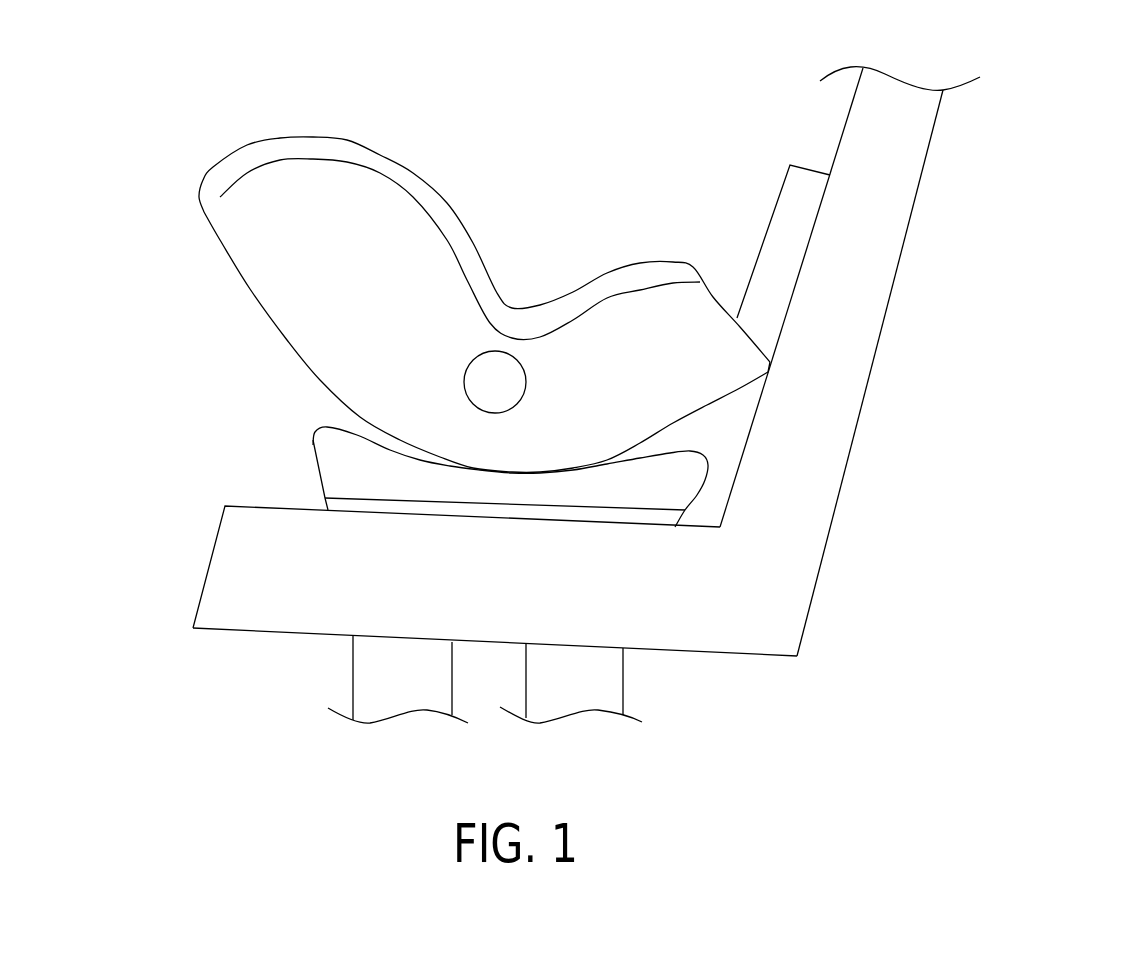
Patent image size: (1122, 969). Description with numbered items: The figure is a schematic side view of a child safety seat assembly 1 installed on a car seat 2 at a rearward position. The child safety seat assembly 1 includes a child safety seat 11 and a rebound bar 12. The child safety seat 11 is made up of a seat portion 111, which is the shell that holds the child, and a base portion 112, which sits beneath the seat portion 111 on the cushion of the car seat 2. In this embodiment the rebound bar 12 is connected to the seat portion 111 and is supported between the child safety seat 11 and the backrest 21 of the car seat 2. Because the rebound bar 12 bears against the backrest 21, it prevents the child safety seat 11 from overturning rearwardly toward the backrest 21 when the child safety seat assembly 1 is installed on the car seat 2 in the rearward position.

The child safety seat assembly 1 is at (192, 108).
The child safety seat 11 is at (176, 303).
The seat portion 111 is at (328, 319).
The base portion 112 is at (338, 469).
The rebound bar 12 is at (785, 195).
The car seat 2 is at (992, 197).
The backrest 21 is at (850, 312).